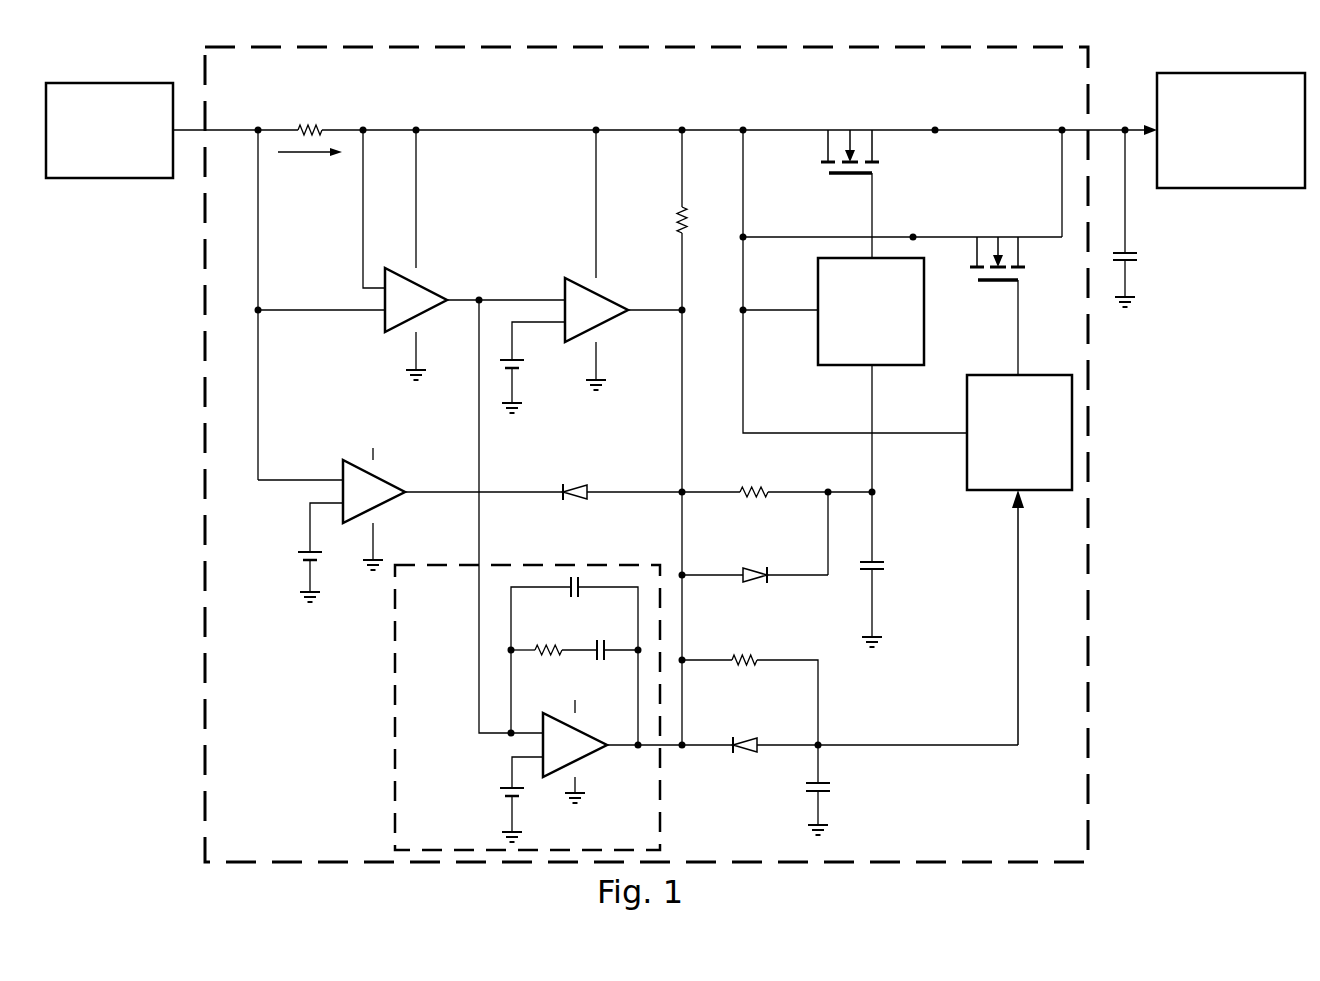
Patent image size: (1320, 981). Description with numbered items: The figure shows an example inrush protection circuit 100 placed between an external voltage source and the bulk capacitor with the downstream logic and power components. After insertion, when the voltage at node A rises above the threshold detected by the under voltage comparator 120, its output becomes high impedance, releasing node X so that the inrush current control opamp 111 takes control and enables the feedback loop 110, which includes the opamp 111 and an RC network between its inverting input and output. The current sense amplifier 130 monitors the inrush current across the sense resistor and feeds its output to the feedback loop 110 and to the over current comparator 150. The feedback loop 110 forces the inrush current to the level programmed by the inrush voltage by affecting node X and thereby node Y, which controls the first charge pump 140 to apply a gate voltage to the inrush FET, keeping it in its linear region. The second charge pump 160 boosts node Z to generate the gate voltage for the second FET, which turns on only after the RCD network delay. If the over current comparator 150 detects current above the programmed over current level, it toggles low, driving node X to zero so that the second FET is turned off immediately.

The inrush protection circuit 100 is at (170, 662).
The feedback loop 110 is at (393, 697).
The inrush current control opamp 111 is at (590, 760).
The under voltage comparator 120 is at (390, 505).
The current sense amplifier 130 is at (428, 318).
The charge pump 140 is at (924, 322).
The over current comparator 150 is at (608, 328).
The charge pump 160 is at (1040, 492).